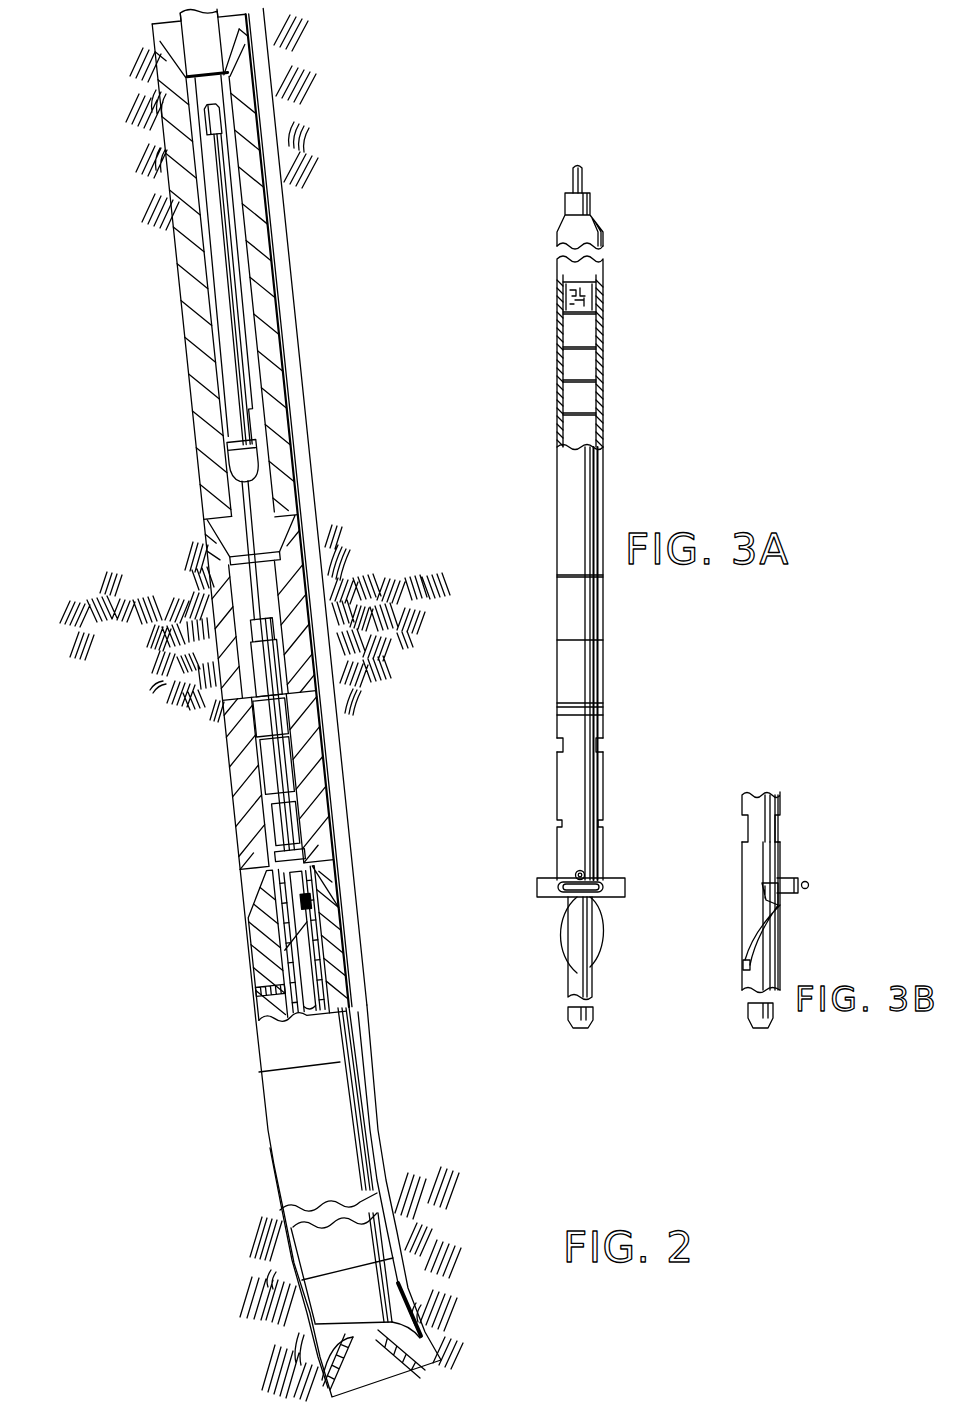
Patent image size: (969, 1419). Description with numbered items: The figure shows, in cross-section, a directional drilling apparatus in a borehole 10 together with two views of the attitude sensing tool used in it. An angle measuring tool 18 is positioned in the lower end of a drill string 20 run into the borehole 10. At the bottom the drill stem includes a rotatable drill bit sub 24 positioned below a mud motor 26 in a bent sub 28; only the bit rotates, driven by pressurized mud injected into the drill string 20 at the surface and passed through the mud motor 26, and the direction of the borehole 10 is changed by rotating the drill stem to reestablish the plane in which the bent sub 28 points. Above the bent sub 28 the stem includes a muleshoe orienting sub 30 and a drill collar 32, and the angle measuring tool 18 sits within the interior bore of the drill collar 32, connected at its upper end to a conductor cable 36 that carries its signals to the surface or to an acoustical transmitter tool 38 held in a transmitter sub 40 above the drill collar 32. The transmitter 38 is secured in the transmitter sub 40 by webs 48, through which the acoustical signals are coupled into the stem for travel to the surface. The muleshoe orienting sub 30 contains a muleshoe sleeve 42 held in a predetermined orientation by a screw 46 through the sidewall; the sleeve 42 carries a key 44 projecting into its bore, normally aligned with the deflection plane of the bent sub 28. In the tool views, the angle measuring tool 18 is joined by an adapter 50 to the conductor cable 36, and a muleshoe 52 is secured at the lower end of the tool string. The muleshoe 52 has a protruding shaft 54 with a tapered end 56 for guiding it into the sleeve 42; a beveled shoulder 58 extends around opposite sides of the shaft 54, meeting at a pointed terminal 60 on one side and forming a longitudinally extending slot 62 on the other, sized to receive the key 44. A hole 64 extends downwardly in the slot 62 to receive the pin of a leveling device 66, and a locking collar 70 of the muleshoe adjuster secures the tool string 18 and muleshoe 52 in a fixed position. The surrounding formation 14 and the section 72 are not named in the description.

In FIG. 2, the borehole 10 is at (367, 1015).
In FIG. 2, the earth formation 14 is at (122, 669).
In FIG. 2, the angle measuring tool 18 is at (266, 719).
In FIG. 3A, the angle measuring tool 18 is at (605, 446).
In FIG. 2, the drill string 20 is at (224, 827).
In FIG. 2, the drill bit sub 24 is at (412, 1285).
In FIG. 2, the mud motor 26 is at (373, 1180).
In FIG. 2, the bent sub 28 is at (362, 1124).
In FIG. 2, the muleshoe orienting sub 30 is at (258, 1009).
In FIG. 2, the drill collar 32 is at (230, 775).
In FIG. 2, the conductor cable 36 is at (262, 584).
In FIG. 3A, the conductor cable 36 is at (585, 180).
In FIG. 2, the acoustical transmitter tool 38 is at (238, 314).
In FIG. 2, the transmitter sub 40 is at (274, 275).
In FIG. 2, the muleshoe sleeve 42 is at (318, 938).
In FIG. 2, the key 44 is at (312, 902).
In FIG. 2, the screw 46 is at (253, 997).
In FIG. 2, the webs 48 is at (229, 123).
In FIG. 3A, the adapter 50 is at (592, 208).
In FIG. 3A, the muleshoe 52 is at (605, 808).
In FIG. 3A, the protruding shaft 54 is at (578, 972).
In FIG. 3A, the tapered end 56 is at (570, 1023).
In FIG. 3A, the beveled shoulder 58 is at (600, 938).
In FIG. 3B, the beveled shoulder 58 is at (747, 965).
In FIG. 3B, the pointed terminal 60 is at (747, 973).
In FIG. 3A, the slot 62 is at (585, 877).
In FIG. 3B, the slot 62 is at (773, 877).
In FIG. 3B, the hole 64 is at (778, 907).
In FIG. 3A, the leveling device 66 is at (625, 887).
In FIG. 3B, the leveling device 66 is at (807, 887).
In FIG. 3A, the locking collar 70 is at (603, 705).
In FIG. 3A, the electronics section 72 is at (603, 381).